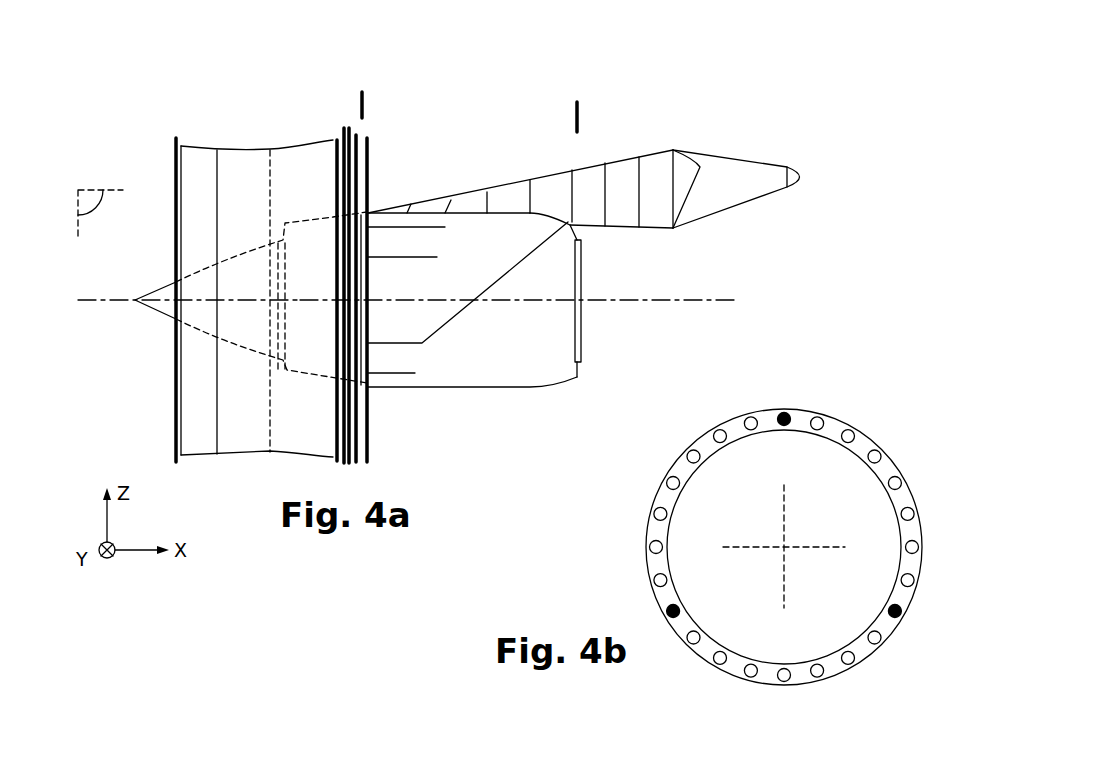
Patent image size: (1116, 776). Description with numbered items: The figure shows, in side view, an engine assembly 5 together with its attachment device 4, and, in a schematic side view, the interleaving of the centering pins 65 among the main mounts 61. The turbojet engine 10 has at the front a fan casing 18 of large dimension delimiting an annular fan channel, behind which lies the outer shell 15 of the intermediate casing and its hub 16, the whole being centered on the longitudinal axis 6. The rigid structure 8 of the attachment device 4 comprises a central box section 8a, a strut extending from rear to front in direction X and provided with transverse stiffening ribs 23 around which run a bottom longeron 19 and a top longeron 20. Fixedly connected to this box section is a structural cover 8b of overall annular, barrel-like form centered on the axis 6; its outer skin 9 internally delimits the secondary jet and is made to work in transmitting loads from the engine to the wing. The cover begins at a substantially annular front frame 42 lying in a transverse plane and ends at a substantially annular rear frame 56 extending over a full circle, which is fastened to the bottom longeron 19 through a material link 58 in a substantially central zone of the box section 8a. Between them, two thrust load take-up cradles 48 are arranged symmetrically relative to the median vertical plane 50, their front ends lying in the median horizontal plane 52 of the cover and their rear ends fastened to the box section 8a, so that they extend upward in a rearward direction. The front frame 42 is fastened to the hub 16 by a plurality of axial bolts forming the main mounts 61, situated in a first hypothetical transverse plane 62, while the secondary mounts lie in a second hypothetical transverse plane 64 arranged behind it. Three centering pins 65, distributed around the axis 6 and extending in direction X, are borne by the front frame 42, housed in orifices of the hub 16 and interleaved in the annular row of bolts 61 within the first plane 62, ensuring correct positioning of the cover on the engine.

In FIG. 4a, the attachment device 4 is at (588, 151).
In FIG. 4a, the engine assembly 5 is at (167, 122).
In FIG. 4a, the longitudinal axis 6 is at (712, 298).
In FIG. 4b, the longitudinal axis 6 is at (786, 546).
In FIG. 4a, the rigid structure 8 is at (645, 153).
In FIG. 4a, the central box section 8a is at (543, 174).
In FIG. 4a, the structural cover 8b is at (473, 397).
In FIG. 4a, the outer skin 9 is at (440, 388).
In FIG. 4a, the turbojet engine 10 is at (259, 462).
In FIG. 4a, the outer shell 15 is at (317, 141).
In FIG. 4a, the hub 16 is at (310, 226).
In FIG. 4a, the fan casing 18 is at (203, 163).
In FIG. 4a, the bottom longeron 19 is at (627, 229).
In FIG. 4a, the top longeron 20 is at (650, 153).
In FIG. 4a, the transverse stiffening ribs 23 is at (530, 195).
In FIG. 4b, the front frame 42 is at (828, 414).
In FIG. 4a, the thrust load take-up cradles 48 is at (516, 266).
In FIG. 4a, the median vertical plane 50 is at (92, 196).
In FIG. 4a, the median horizontal plane 52 is at (90, 302).
In FIG. 4a, the rear frame 56 is at (583, 337).
In FIG. 4a, the material link 58 is at (580, 230).
In FIG. 4b, the main mounts 61 is at (910, 582).
In FIG. 4a, the first hypothetical transverse plane 62 is at (363, 103).
In FIG. 4a, the second hypothetical transverse plane 64 is at (578, 112).
In FIG. 4b, the centering pins 65 is at (784, 412).